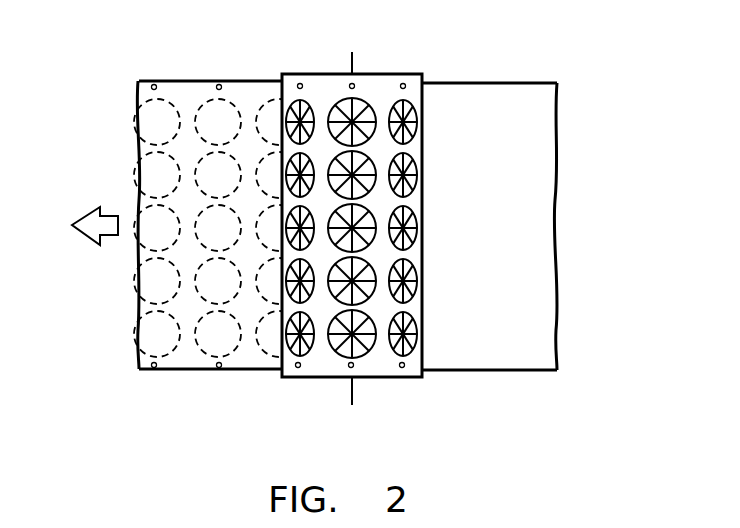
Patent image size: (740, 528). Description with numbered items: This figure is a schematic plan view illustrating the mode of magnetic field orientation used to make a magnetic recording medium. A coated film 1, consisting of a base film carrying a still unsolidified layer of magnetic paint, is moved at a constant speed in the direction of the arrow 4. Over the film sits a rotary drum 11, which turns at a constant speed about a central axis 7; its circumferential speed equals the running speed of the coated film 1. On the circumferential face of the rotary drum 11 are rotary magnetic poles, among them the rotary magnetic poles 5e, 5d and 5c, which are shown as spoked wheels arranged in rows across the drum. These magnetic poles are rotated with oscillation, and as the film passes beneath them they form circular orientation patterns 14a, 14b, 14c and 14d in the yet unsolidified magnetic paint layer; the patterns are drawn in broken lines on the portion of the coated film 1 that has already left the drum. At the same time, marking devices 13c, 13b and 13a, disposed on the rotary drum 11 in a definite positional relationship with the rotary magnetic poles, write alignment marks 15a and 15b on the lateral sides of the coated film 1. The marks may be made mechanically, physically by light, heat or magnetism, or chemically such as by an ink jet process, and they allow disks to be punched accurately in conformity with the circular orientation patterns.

The coated film 1 is at (538, 159).
The arrow 4 is at (86, 242).
The rotary magnetic pole 5c is at (406, 352).
The rotary magnetic pole 5d is at (356, 352).
The rotary magnetic pole 5e is at (300, 352).
The central axis 7 is at (352, 63).
The rotary drum 11 is at (422, 80).
The marking device 13a is at (403, 369).
The marking device 13b is at (350, 369).
The marking device 13c is at (297, 369).
The circular orientation pattern 14a is at (148, 335).
The circular orientation pattern 14b is at (148, 280).
The circular orientation pattern 14c is at (145, 223).
The circular orientation pattern 14d is at (150, 173).
The alignment mark 15a is at (153, 369).
The alignment mark 15b is at (218, 369).